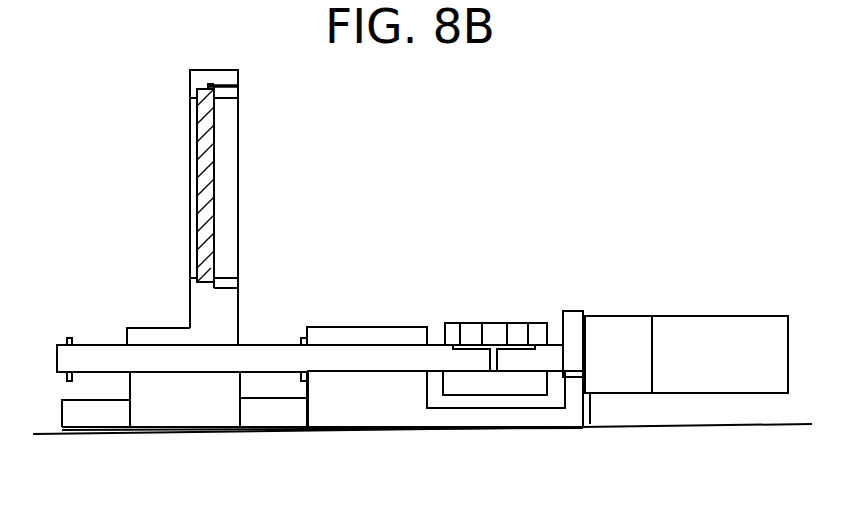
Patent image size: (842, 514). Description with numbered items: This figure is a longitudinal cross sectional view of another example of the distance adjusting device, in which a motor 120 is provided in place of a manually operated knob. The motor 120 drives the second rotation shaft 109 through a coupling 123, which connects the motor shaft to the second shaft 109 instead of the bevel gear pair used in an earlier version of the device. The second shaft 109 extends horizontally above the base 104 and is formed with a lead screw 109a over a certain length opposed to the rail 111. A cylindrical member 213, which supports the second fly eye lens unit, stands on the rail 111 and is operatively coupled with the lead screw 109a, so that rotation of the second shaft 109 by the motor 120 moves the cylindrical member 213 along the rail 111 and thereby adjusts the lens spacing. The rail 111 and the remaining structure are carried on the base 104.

The cylindrical member 213 is at (200, 80).
The lead screw 109a is at (106, 343).
The second rotation shaft 109 is at (433, 355).
The coupling 123 is at (493, 330).
The motor 120 is at (696, 328).
The rail 111 is at (272, 408).
The base 104 is at (370, 400).